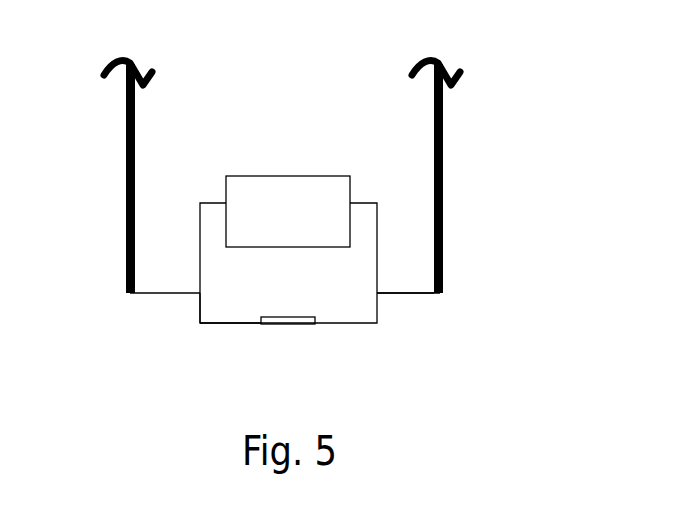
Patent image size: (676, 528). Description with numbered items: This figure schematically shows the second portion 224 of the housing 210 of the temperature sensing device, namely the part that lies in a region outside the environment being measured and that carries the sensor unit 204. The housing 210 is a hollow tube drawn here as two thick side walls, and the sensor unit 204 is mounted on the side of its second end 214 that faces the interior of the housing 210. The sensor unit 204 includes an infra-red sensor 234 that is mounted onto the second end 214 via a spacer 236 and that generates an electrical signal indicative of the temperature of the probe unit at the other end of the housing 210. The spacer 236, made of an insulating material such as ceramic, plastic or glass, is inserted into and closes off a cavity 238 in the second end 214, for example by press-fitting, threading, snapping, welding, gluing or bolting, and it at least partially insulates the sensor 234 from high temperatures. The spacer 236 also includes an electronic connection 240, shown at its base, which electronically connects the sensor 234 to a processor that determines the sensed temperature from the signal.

The housing 210 is at (127, 122).
The second end 214 is at (420, 304).
The spacer 236 is at (226, 203).
The infra-red sensor 234 is at (308, 175).
The electronic connection 240 is at (315, 338).
The cavity 238 is at (188, 306).
The sensor unit 204 is at (250, 343).
The second portion 224 is at (505, 263).